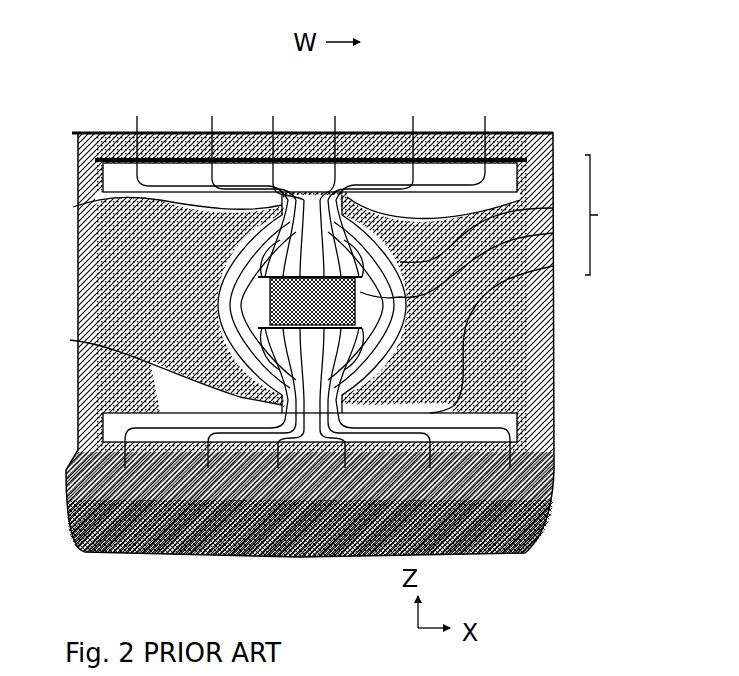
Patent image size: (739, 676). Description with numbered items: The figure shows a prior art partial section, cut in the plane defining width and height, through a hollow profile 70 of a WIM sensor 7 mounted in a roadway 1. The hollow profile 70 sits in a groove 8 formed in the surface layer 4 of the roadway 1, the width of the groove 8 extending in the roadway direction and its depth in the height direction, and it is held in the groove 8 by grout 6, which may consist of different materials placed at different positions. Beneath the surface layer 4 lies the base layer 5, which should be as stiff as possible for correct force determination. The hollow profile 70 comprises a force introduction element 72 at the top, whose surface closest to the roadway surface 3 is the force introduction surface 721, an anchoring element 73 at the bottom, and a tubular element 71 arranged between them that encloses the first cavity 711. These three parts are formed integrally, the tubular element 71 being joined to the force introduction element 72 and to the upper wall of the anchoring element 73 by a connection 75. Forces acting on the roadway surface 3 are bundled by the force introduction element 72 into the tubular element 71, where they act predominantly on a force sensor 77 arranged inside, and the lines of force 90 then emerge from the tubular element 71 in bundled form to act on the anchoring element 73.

The roadway 1 is at (108, 56).
The roadway surface 3 is at (533, 136).
The surface layer 4 is at (527, 480).
The base layer 5 is at (503, 520).
The grout 6 is at (112, 362).
The WIM sensor 7 is at (382, 148).
The groove 8 is at (248, 96).
The hollow profile 70 is at (607, 215).
The tubular element 71 is at (491, 228).
The first cavity 711 is at (474, 260).
The force introduction element 72 is at (517, 185).
The force introduction surface 721 is at (445, 163).
The anchoring element 73 is at (343, 347).
The connection 75 is at (275, 298).
The force sensor 77 is at (270, 303).
The lines of force 90 is at (311, 277).